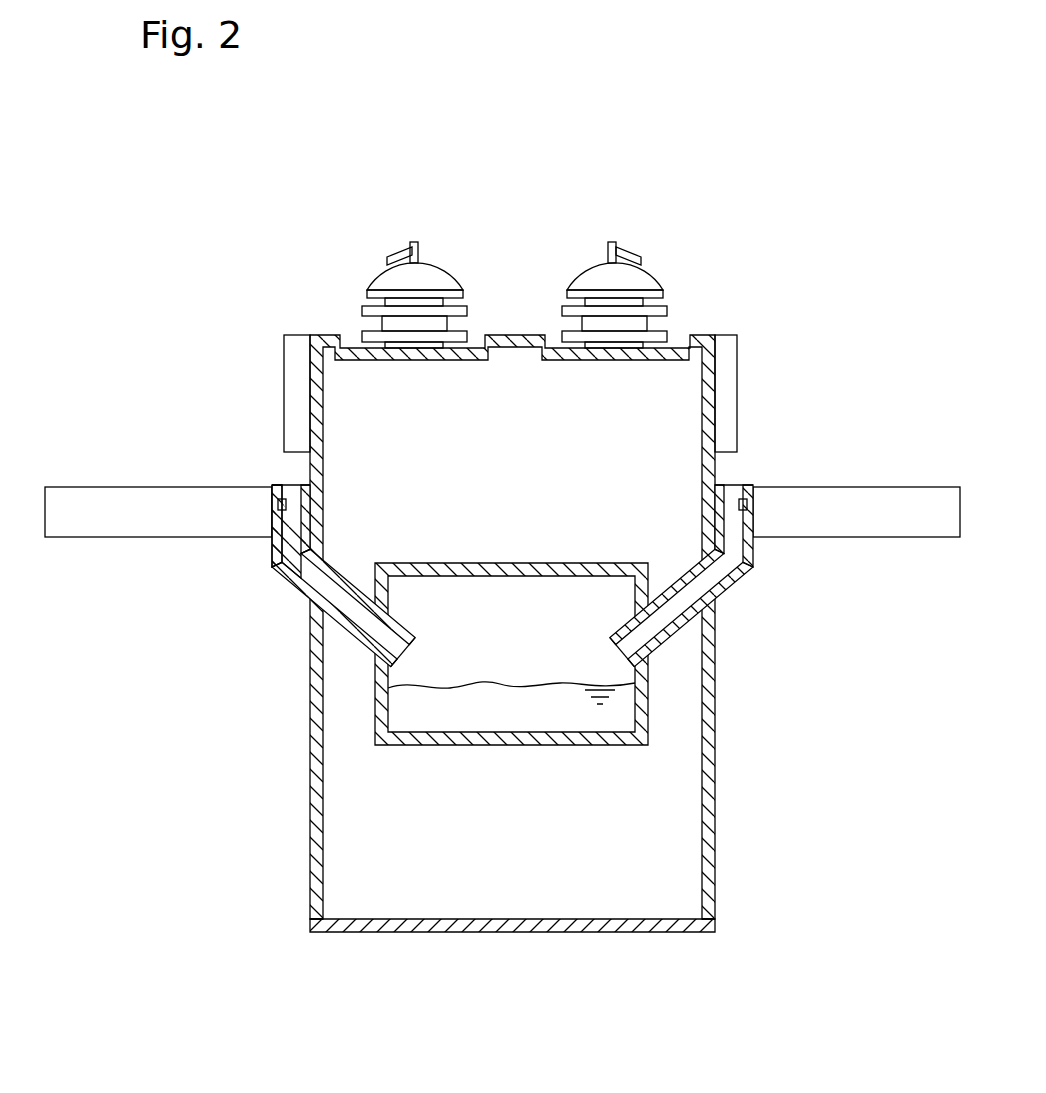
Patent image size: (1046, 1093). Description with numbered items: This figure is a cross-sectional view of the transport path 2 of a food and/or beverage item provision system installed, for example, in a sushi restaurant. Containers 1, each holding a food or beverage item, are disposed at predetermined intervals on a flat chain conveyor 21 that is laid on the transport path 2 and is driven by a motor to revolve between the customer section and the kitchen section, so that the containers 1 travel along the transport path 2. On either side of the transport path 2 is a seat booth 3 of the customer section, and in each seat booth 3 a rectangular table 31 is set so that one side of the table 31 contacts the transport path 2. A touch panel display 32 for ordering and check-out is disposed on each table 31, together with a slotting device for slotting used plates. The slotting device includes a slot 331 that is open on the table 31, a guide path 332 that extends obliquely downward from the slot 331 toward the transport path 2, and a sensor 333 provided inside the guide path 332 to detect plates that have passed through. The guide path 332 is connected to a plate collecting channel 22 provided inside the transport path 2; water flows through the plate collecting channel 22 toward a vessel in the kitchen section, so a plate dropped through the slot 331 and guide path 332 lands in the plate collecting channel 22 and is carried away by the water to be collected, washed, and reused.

The container 1 is at (393, 244).
The transport path 2 is at (704, 323).
The seat booth 3 is at (502, 554).
The flat chain conveyor 21 is at (365, 335).
The plate collecting channel 22 is at (400, 686).
The table 31 is at (150, 496).
The touch panel display 32 is at (293, 378).
The slot 331 is at (302, 490).
The guide path 332 is at (288, 587).
The sensor 333 is at (277, 504).